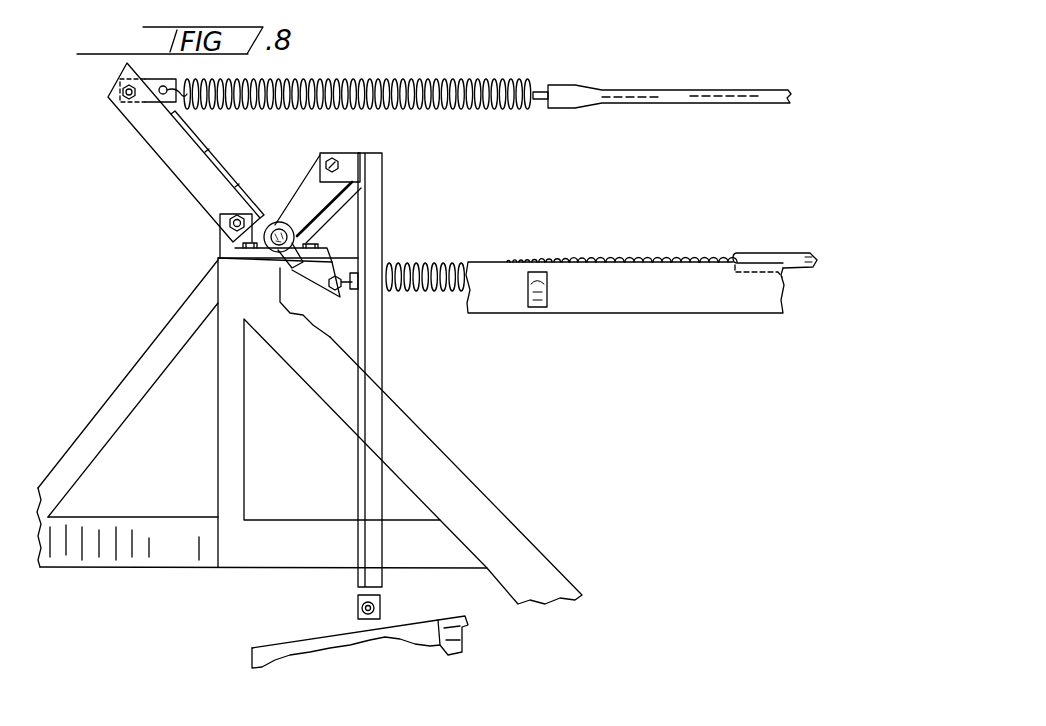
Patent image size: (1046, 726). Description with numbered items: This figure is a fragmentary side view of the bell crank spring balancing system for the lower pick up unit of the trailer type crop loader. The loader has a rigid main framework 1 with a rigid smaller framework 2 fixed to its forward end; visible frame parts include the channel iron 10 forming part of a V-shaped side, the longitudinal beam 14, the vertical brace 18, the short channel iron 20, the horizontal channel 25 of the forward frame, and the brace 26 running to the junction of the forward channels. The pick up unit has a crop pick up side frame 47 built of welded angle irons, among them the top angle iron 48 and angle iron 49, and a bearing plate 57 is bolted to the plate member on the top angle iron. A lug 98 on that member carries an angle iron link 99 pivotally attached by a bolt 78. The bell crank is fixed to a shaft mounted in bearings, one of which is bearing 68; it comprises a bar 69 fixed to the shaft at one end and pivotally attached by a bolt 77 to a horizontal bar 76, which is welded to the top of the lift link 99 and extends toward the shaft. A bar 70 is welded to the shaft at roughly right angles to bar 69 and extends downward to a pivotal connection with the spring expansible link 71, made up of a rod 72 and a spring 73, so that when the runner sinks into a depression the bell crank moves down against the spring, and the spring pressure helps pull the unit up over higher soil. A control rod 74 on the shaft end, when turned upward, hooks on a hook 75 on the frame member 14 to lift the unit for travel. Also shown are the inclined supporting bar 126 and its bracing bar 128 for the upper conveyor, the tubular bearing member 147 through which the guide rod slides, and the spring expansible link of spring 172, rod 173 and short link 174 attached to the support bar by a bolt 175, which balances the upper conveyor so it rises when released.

The main framework 1 is at (312, 434).
The smaller framework 2 is at (127, 413).
The channel iron 10 is at (548, 572).
The longitudinal beam 14 is at (625, 304).
The vertical brace 18 is at (238, 486).
The short channel iron 20 is at (275, 573).
The horizontal channel 25 is at (113, 521).
The brace 26 is at (157, 372).
The crop pick up side frame 47 is at (344, 651).
The top angle iron 48 is at (305, 641).
The angle iron 49 is at (252, 670).
The bearing plate 57 is at (468, 648).
The bearing 68 is at (274, 222).
The bar 69 is at (301, 183).
The bar 70 is at (318, 279).
The spring expansible link 71 is at (775, 240).
The rod 72 is at (760, 253).
The spring 73 is at (436, 292).
The control rod 74 is at (280, 268).
The hook 75 is at (528, 303).
The horizontal bar 76 is at (342, 182).
The bolt 77 is at (345, 160).
The bolt 78 is at (382, 605).
The lug 98 is at (330, 651).
The angle iron link 99 is at (390, 244).
The supporting bar 126 is at (178, 170).
The bracing bar 128 is at (197, 136).
The tubular bearing member 147 is at (330, 258).
The spring 172 is at (455, 78).
The rod 173 is at (664, 100).
The short link 174 is at (151, 97).
The bolt 175 is at (121, 102).